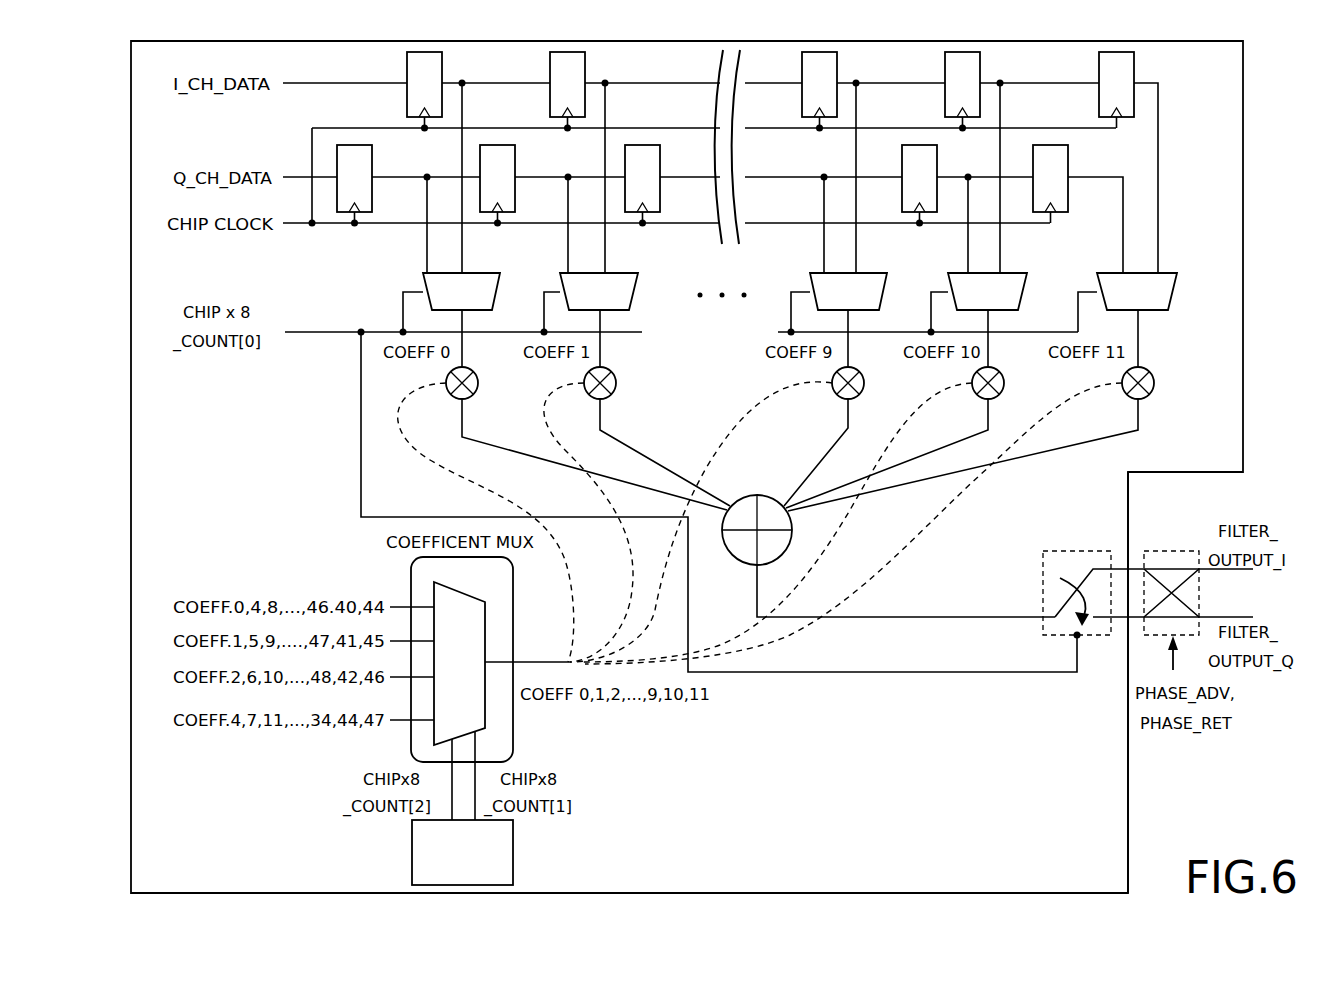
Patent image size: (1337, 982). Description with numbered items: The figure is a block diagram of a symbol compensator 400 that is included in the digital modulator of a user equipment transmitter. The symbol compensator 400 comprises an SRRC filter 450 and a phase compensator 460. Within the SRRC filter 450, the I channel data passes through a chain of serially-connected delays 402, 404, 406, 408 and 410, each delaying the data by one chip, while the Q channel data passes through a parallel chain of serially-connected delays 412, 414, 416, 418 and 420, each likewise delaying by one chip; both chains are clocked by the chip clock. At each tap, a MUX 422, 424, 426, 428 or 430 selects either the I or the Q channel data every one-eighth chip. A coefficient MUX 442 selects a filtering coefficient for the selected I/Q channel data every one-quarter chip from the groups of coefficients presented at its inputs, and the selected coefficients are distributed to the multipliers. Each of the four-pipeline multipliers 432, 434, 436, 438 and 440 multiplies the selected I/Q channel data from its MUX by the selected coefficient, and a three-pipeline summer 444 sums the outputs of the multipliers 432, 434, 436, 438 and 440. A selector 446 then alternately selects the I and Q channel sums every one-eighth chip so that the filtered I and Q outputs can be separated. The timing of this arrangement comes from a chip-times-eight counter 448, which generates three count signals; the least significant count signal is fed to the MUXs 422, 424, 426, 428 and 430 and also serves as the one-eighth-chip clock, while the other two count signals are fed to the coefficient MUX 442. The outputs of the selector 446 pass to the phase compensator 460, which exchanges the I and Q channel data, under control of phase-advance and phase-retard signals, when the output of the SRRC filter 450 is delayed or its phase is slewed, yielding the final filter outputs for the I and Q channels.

The symbol compensator 400 is at (1212, 777).
The delay 402 is at (442, 60).
The delay 404 is at (585, 60).
The delay 406 is at (837, 60).
The delay 408 is at (980, 60).
The delay 410 is at (1134, 60).
The delay 412 is at (372, 153).
The delay 414 is at (515, 153).
The delay 416 is at (660, 153).
The delay 418 is at (937, 153).
The delay 420 is at (1068, 153).
The MUX 422 is at (492, 264).
The MUX 424 is at (612, 273).
The MUX 426 is at (865, 273).
The MUX 428 is at (1010, 273).
The MUX 430 is at (1160, 273).
The 4-pipeline multiplier 432 is at (478, 383).
The 4-pipeline multiplier 434 is at (616, 383).
The 4-pipeline multiplier 436 is at (864, 383).
The 4-pipeline multiplier 438 is at (1004, 383).
The 4-pipeline multiplier 440 is at (1154, 383).
The coefficient MUX 442 is at (513, 748).
The 3-pipeline summer 444 is at (757, 495).
The selector 446 is at (1076, 549).
The CHIP×8 COUNTER 448 is at (513, 855).
The SRRC filter 450 is at (1128, 818).
The phase compensator 460 is at (1171, 549).